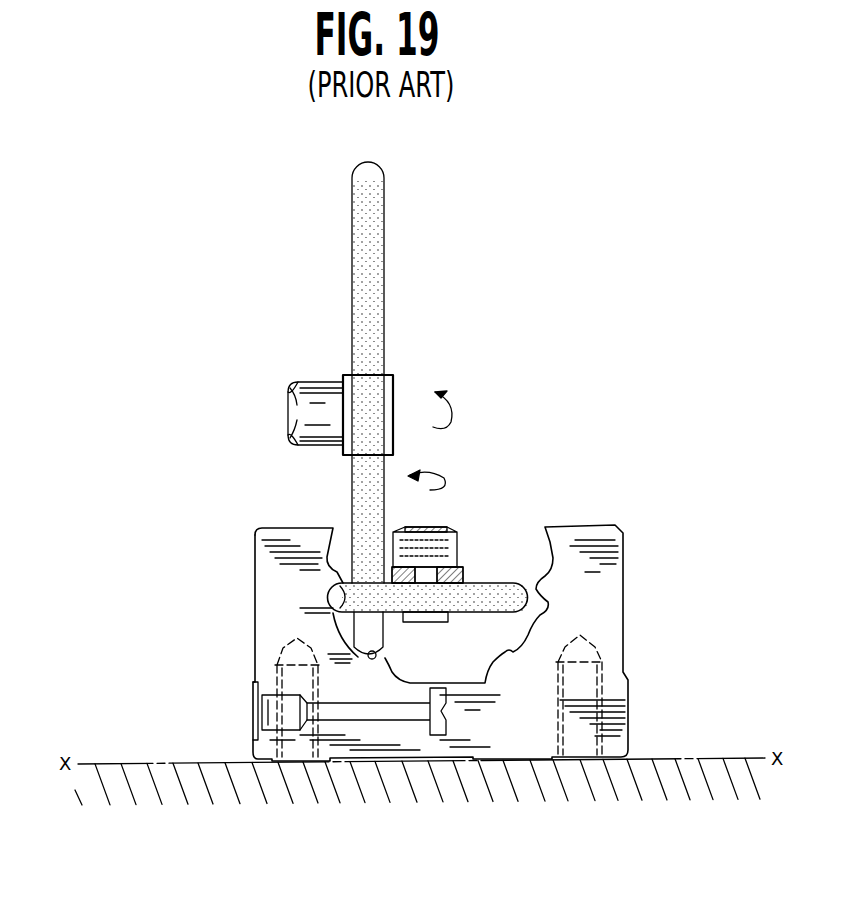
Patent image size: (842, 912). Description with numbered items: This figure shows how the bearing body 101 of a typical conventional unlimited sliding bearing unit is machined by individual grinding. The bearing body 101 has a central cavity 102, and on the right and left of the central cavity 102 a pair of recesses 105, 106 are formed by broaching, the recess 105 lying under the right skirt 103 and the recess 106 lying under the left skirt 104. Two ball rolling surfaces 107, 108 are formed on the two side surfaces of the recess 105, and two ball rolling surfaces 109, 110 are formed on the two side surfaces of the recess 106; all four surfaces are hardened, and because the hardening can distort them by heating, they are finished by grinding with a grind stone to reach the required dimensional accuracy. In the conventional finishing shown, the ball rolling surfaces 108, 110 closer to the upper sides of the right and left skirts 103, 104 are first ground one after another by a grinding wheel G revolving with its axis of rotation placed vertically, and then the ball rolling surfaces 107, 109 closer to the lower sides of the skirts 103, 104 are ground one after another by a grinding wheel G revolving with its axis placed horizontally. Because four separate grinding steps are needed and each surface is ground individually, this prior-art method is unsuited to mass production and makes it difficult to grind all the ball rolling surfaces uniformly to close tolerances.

The grinding wheel G is at (392, 340).
The bearing body 101 is at (622, 523).
The central cavity 102 is at (477, 655).
The right skirt 103 is at (607, 615).
The left skirt 104 is at (272, 622).
The recess 105 is at (537, 615).
The recess 106 is at (340, 630).
The ball rolling surface 107 is at (512, 650).
The ball rolling surface 108 is at (536, 587).
The ball rolling surface 109 is at (367, 652).
The ball rolling surface 110 is at (347, 581).